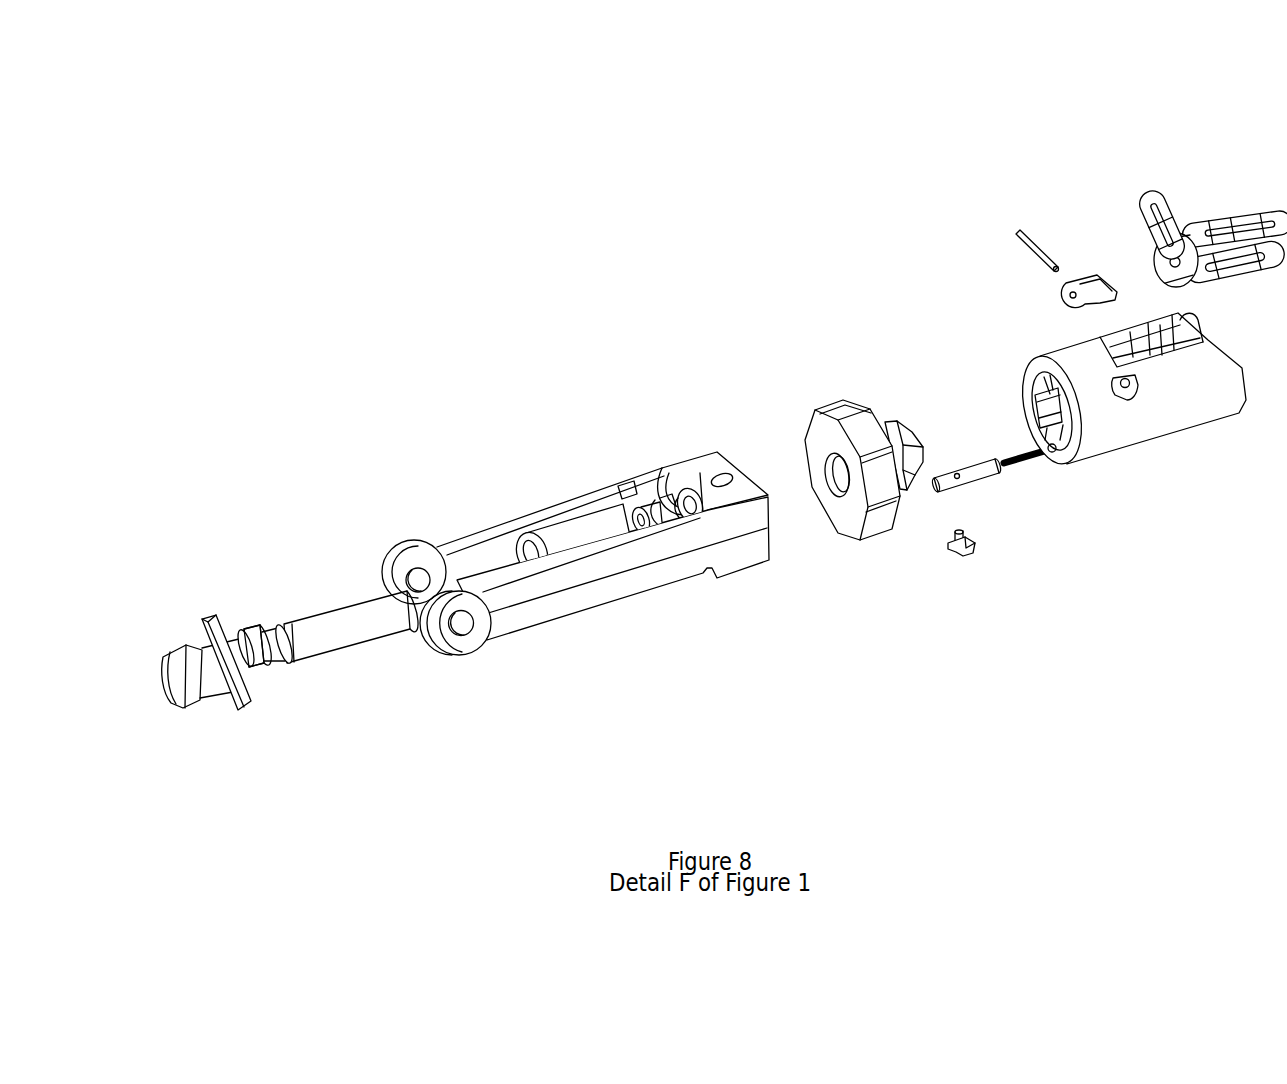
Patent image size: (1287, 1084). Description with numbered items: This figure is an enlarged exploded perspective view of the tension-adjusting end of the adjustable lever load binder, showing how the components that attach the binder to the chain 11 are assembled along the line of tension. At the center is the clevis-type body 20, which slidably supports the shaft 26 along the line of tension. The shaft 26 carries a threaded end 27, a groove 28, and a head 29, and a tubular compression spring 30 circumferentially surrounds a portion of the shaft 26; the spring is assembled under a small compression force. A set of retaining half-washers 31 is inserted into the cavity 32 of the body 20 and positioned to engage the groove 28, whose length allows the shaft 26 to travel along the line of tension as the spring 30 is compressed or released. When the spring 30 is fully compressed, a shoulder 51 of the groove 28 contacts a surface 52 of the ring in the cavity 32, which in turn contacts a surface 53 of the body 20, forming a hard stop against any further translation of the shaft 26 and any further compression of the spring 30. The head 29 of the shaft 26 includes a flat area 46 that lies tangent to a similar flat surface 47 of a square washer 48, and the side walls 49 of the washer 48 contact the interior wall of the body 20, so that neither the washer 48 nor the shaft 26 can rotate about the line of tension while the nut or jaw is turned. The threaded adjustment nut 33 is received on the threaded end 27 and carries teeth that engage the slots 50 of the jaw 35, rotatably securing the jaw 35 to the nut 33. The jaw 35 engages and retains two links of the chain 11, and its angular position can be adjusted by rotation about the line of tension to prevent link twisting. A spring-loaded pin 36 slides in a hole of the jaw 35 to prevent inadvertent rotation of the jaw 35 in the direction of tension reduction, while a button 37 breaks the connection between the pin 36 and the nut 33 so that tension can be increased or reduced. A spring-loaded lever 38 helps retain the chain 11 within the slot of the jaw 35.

The chain 11 is at (1207, 233).
The clevis-type body 20 is at (720, 450).
The shaft 26 is at (347, 647).
The threaded end 27 is at (415, 642).
The groove 28 is at (278, 667).
The head 29 is at (183, 640).
The tubular compression spring 30 is at (560, 533).
The half-washers 31 is at (648, 490).
The cavity 32 is at (700, 470).
The threaded adjustment nut 33 is at (855, 403).
The jaw 35 is at (1105, 435).
The spring-loaded pin 36 is at (982, 480).
The button 37 is at (965, 555).
The spring-loaded lever 38 is at (1090, 273).
The flat area 46 is at (188, 687).
The flat surface 47 is at (226, 693).
The square washer 48 is at (203, 623).
The side walls 49 is at (247, 700).
The slots 50 is at (1033, 410).
The shoulder 51 is at (263, 640).
The surface 52 is at (630, 497).
The surface 53 is at (692, 480).